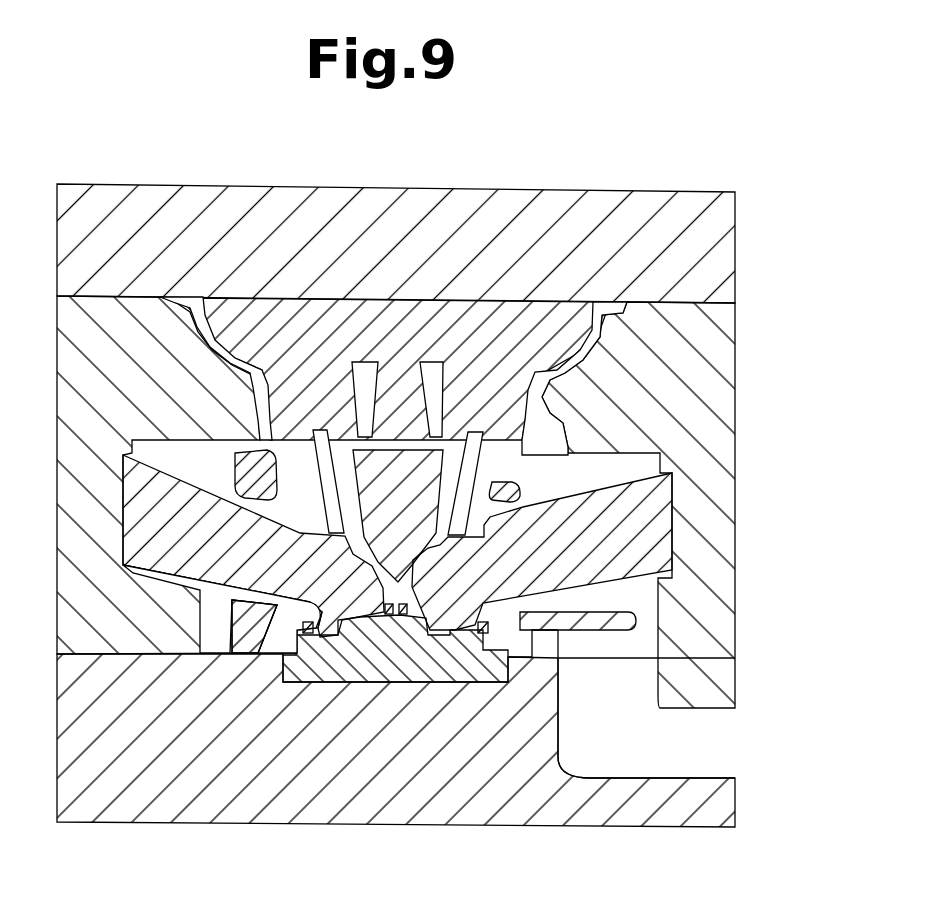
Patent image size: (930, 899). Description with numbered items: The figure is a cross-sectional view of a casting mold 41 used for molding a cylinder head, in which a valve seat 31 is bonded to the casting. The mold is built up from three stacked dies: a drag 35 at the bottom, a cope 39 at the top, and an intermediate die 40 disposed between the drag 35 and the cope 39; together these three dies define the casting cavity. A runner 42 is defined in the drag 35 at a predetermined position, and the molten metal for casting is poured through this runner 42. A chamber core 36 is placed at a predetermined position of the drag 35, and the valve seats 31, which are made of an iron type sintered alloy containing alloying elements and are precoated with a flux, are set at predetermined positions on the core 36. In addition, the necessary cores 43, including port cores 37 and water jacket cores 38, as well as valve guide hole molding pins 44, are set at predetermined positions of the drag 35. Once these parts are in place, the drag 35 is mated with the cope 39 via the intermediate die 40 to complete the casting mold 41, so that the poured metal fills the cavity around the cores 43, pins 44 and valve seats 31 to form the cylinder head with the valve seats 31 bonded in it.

The casting mold 41 is at (171, 161).
The cope 39 is at (421, 188).
The intermediate die 40 is at (106, 394).
The cores 43 is at (402, 327).
The port core 37 is at (121, 486).
The water jacket core 38 is at (232, 462).
The valve guide hole molding pin 44 is at (320, 509).
The valve seat 31 is at (302, 634).
The chamber core 36 is at (396, 683).
The drag 35 is at (342, 823).
The runner 42 is at (600, 777).